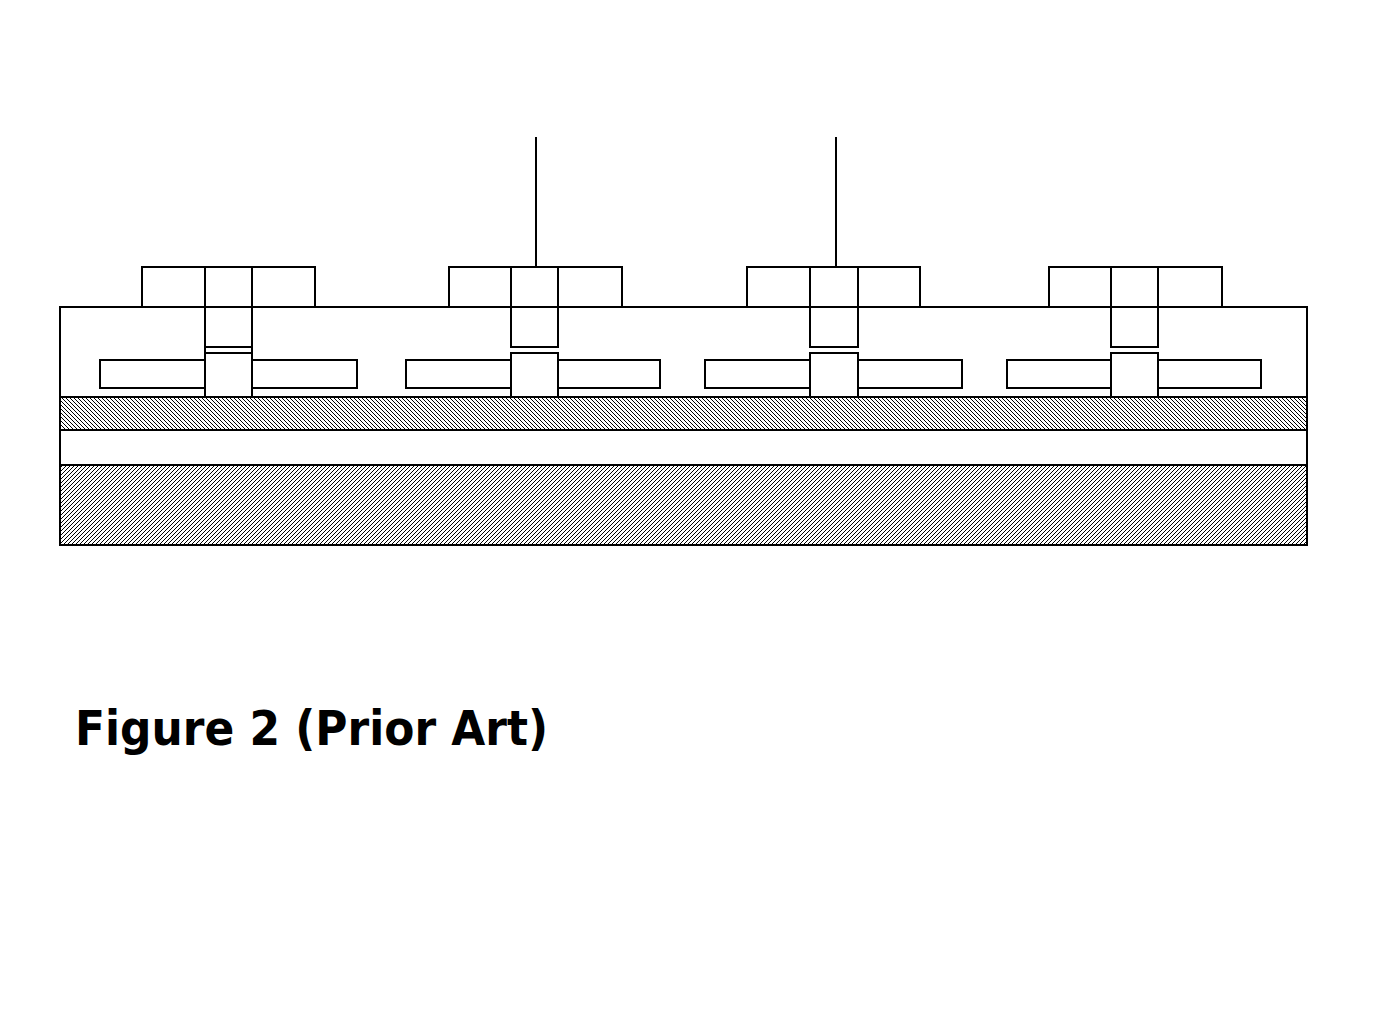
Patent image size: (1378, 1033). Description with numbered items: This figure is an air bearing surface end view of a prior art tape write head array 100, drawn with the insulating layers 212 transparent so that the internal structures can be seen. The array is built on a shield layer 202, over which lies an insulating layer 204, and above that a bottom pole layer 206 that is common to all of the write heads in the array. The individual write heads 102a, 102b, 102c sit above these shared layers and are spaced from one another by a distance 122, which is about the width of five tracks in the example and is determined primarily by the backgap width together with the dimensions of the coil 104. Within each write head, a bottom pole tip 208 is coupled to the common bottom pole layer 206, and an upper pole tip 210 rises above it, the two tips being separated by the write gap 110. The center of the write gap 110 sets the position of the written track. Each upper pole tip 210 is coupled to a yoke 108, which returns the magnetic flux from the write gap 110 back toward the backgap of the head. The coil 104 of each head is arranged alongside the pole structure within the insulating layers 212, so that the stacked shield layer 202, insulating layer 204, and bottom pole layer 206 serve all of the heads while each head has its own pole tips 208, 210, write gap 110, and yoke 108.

The write head array 100 is at (1242, 263).
The write head 102a is at (249, 367).
The write head 102b is at (618, 338).
The write head 102c is at (932, 328).
The coil 104 is at (153, 375).
The yoke 108 is at (173, 280).
The write gap 110 is at (232, 350).
The distance 122 is at (835, 167).
The shield layer 202 is at (1188, 517).
The insulating layer 204 is at (1068, 459).
The bottom pole layer 206 is at (1175, 428).
The bottom pole tip 208 is at (230, 373).
The upper pole tip 210 is at (228, 327).
The insulating layers 212 is at (717, 349).